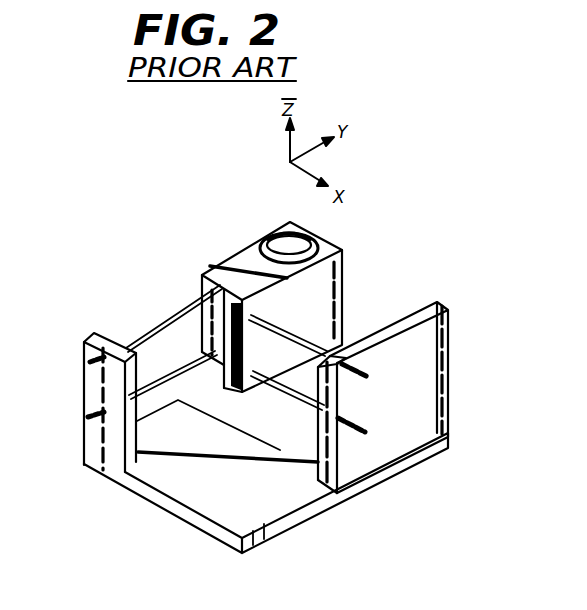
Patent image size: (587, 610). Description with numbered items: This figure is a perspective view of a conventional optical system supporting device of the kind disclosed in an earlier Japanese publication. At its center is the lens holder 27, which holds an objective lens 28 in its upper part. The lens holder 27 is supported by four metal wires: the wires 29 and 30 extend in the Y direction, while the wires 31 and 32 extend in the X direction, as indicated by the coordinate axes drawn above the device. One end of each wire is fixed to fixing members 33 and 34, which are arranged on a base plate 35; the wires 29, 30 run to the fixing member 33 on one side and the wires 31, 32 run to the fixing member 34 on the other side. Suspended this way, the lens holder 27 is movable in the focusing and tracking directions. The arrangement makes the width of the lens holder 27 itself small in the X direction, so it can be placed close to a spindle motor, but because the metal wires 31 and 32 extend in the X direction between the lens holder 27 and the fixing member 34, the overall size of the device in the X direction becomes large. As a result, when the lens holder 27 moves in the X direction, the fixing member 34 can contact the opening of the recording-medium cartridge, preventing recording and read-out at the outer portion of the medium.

The lens holder 27 is at (228, 265).
The objective lens 28 is at (318, 238).
The metal wire 29 is at (162, 322).
The metal wire 30 is at (136, 352).
The metal wire 31 is at (340, 344).
The metal wire 32 is at (292, 441).
The fixing member 33 is at (100, 432).
The fixing member 34 is at (420, 397).
The base plate 35 is at (190, 490).